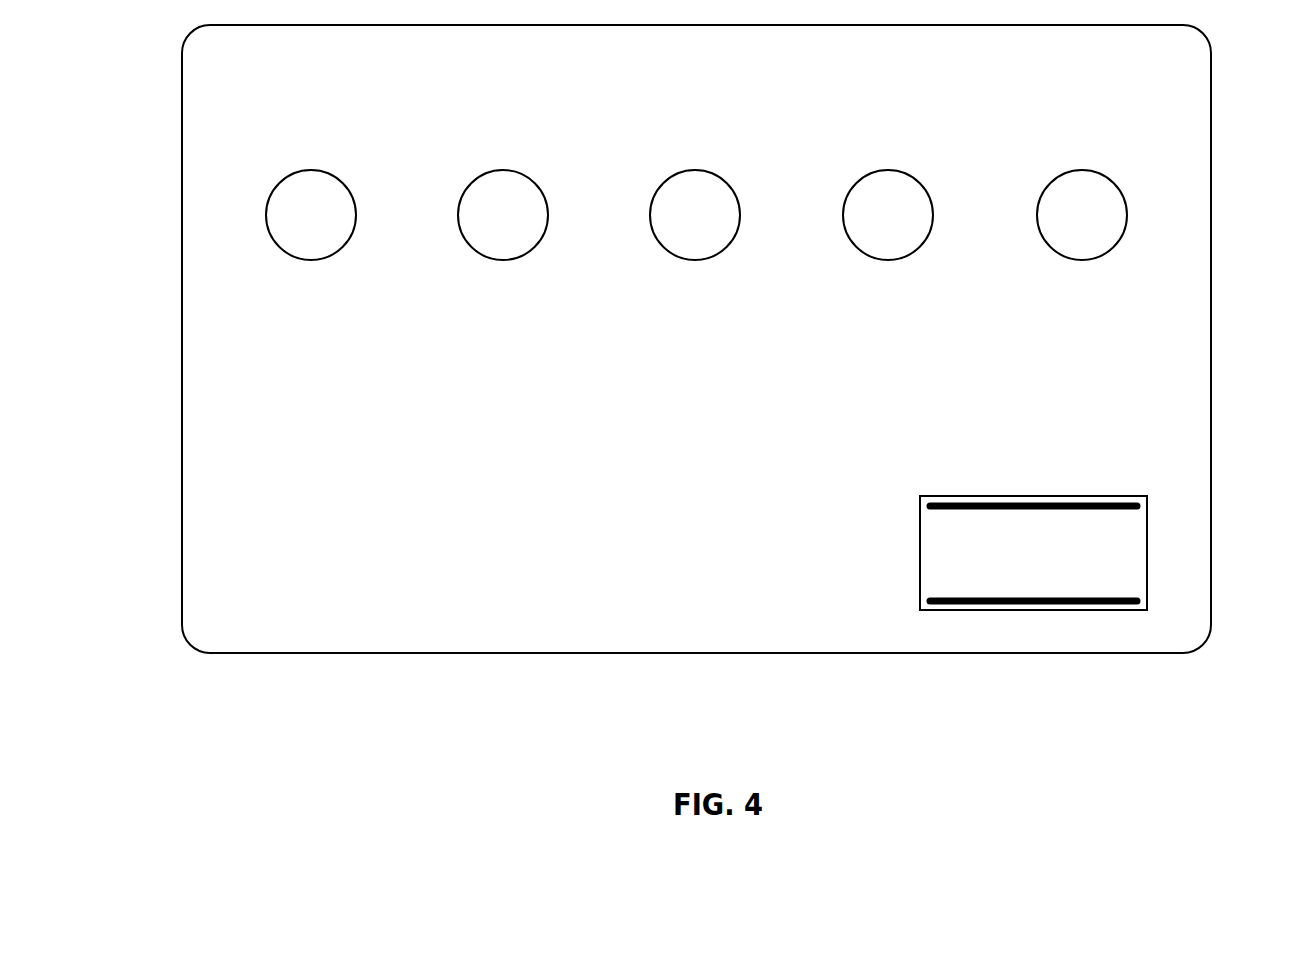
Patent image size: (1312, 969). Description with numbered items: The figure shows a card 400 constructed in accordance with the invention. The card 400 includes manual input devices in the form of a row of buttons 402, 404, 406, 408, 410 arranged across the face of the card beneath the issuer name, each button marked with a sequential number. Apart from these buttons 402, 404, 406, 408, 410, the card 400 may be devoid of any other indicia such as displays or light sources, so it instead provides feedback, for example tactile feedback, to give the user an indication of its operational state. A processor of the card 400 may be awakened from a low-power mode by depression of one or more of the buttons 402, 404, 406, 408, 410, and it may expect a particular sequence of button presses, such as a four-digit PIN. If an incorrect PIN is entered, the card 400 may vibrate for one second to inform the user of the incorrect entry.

The card 400 is at (1267, 397).
The button 402 is at (282, 178).
The button 404 is at (475, 178).
The button 406 is at (687, 170).
The button 408 is at (862, 176).
The button 410 is at (1053, 178).